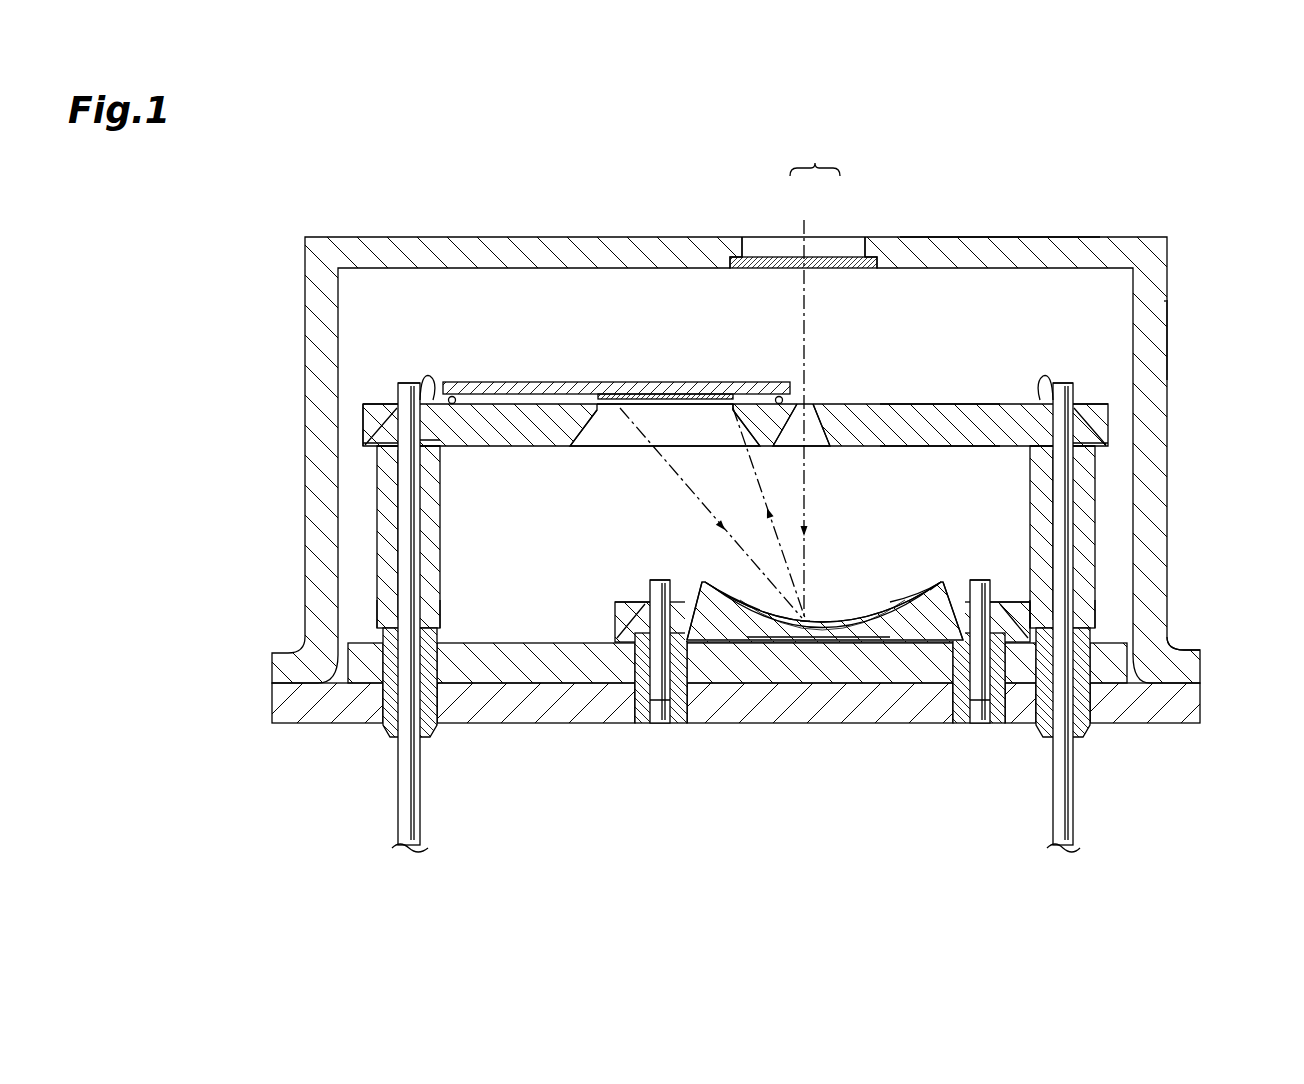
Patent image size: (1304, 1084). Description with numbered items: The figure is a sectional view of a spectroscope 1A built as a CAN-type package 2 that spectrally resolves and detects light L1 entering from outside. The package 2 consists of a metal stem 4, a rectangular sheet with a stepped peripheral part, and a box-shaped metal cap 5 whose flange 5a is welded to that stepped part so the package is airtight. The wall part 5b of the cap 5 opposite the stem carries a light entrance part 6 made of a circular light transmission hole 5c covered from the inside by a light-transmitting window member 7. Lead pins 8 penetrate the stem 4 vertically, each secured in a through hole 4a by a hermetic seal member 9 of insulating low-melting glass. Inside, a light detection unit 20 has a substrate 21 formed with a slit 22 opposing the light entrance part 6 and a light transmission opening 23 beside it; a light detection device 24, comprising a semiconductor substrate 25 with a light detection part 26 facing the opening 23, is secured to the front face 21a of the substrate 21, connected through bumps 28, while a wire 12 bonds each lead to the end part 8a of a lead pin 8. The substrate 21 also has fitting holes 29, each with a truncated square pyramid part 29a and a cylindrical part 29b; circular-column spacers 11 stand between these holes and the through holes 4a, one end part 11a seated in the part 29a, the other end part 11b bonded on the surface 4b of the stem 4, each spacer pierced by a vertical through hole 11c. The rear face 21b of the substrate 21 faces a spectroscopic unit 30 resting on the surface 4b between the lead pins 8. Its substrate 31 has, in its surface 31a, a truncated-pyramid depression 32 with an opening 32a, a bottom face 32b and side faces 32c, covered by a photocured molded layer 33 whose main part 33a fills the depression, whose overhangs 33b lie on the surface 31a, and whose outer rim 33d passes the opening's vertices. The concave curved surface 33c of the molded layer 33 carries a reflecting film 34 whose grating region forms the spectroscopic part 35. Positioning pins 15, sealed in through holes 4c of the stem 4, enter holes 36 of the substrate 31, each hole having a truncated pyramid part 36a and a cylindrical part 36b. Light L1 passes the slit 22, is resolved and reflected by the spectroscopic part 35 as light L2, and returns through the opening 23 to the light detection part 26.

The spectroscope 1A is at (1210, 208).
The package 2 is at (1172, 336).
The stem 4 is at (1140, 724).
The through hole 4a is at (430, 737).
The surface 4b is at (482, 643).
The through hole 4c is at (686, 714).
The cap 5 is at (1128, 238).
The flange 5a is at (1183, 649).
The wall part 5b is at (1013, 247).
The light transmission hole 5c is at (752, 248).
The light entrance part 6 is at (815, 154).
The window member 7 is at (822, 262).
The lead pin 8 is at (412, 840).
The end part 8a is at (398, 412).
The hermetic seal member 9 is at (385, 735).
The spacer 11 is at (383, 528).
The one end part 11a is at (392, 408).
The other end part 11b is at (380, 645).
The through hole 11c is at (405, 543).
The wire 12 is at (428, 378).
The positioning pin 15 is at (643, 712).
The light detection unit 20 is at (355, 427).
The substrate 21 is at (487, 430).
The front face 21a is at (915, 404).
The lower surface of substrate 21b is at (925, 447).
The slit 22 is at (825, 433).
The light transmission opening 23 is at (587, 428).
The light detection device 24 is at (505, 377).
The semiconductor substrate 25 is at (550, 390).
The light detection part 26 is at (686, 398).
The bump 28 is at (453, 396).
The hole 29 is at (377, 443).
The truncated square pyramid part 29a is at (440, 446).
The cylindrical part 29b is at (405, 385).
The spectroscopic unit 30 is at (606, 612).
The substrate 31 is at (627, 612).
The surface 31a is at (640, 602).
The depression 32 is at (847, 641).
The opening 32a is at (725, 585).
The bottom face 32b is at (813, 641).
The side faces 32c is at (893, 643).
The molded layer 33 is at (752, 636).
The main part 33a is at (773, 640).
The overhangs 33b is at (902, 597).
The curved surface 33c is at (907, 584).
The outer rim 33d is at (925, 586).
The reflecting film 34 is at (865, 598).
The spectroscopic part 35 is at (827, 600).
The hole 36 is at (662, 725).
The truncated square pyramid part 36a is at (657, 668).
The cylindrical part 36b is at (665, 583).
The light L1 is at (810, 512).
The light L2 is at (675, 488).